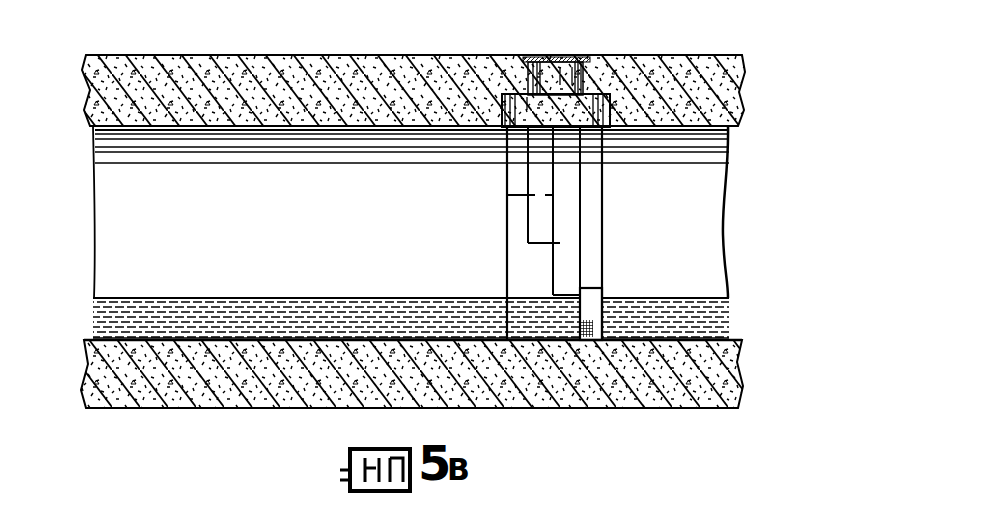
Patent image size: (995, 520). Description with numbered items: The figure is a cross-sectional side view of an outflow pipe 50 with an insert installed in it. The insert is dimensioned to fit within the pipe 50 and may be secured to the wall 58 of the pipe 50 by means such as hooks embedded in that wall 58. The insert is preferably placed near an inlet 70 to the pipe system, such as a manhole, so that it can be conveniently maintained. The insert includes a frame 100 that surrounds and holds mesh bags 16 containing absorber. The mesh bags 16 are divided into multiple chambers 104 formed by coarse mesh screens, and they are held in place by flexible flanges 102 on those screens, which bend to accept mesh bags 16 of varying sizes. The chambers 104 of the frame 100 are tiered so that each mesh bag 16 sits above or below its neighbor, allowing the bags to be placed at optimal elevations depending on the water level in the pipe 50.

The mesh bag 16 is at (592, 300).
The pipe 50 is at (392, 141).
The wall 58 is at (133, 192).
The inlet 70 is at (558, 72).
The frame 100 is at (602, 172).
The flange 102 is at (572, 242).
The chamber 104 is at (520, 173).